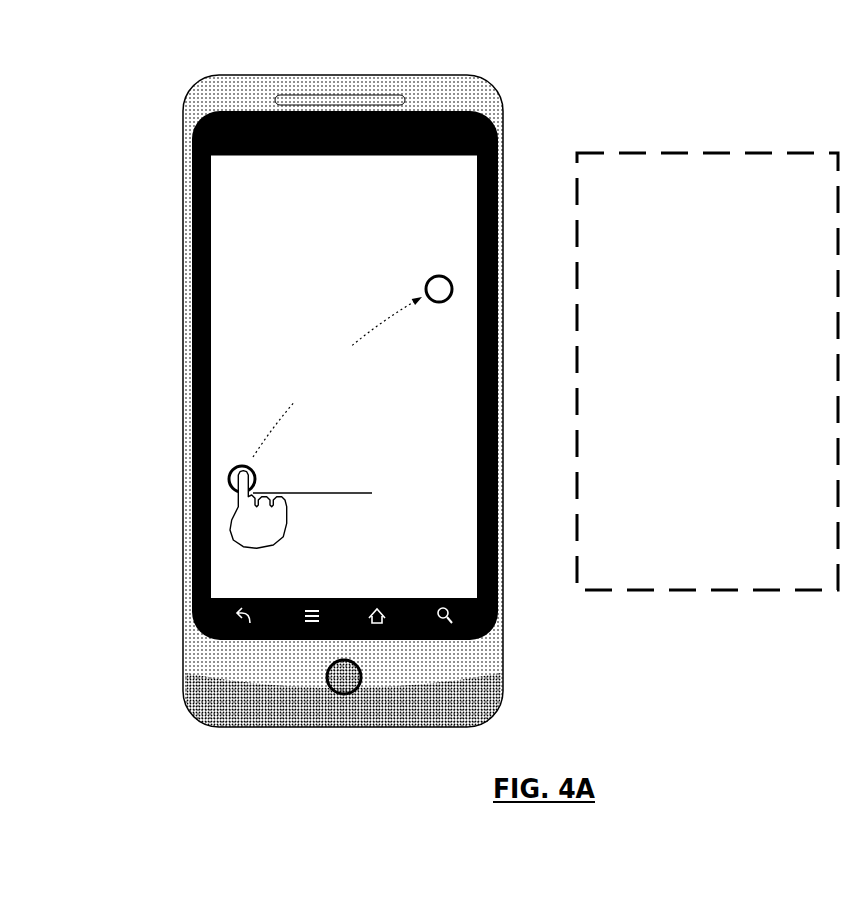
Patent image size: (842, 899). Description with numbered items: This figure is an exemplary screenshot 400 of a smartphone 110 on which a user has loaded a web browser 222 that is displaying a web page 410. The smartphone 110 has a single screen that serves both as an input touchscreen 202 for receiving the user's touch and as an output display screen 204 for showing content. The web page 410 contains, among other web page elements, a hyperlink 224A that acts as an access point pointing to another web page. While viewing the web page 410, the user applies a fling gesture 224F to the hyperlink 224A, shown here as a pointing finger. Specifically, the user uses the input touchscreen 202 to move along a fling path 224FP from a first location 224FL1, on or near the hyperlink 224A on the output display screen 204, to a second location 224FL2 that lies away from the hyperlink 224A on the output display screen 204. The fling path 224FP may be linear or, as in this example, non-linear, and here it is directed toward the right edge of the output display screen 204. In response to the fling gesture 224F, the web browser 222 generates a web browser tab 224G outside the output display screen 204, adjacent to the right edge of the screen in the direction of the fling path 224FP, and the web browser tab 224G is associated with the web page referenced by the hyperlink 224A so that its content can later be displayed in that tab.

The smartphone 110 is at (197, 92).
The web browser 222 is at (212, 205).
The input touchscreen 202 is at (232, 290).
The output display screen 204 is at (355, 150).
The web page 410 is at (341, 181).
The web browser tab 224G is at (707, 371).
The fling path 224FP is at (337, 377).
The second location 224FL2 is at (439, 298).
The first location 224FL1 is at (264, 472).
The hyperlink 224A is at (337, 481).
The fling gesture 224F is at (258, 510).
The screenshot 400 is at (556, 730).